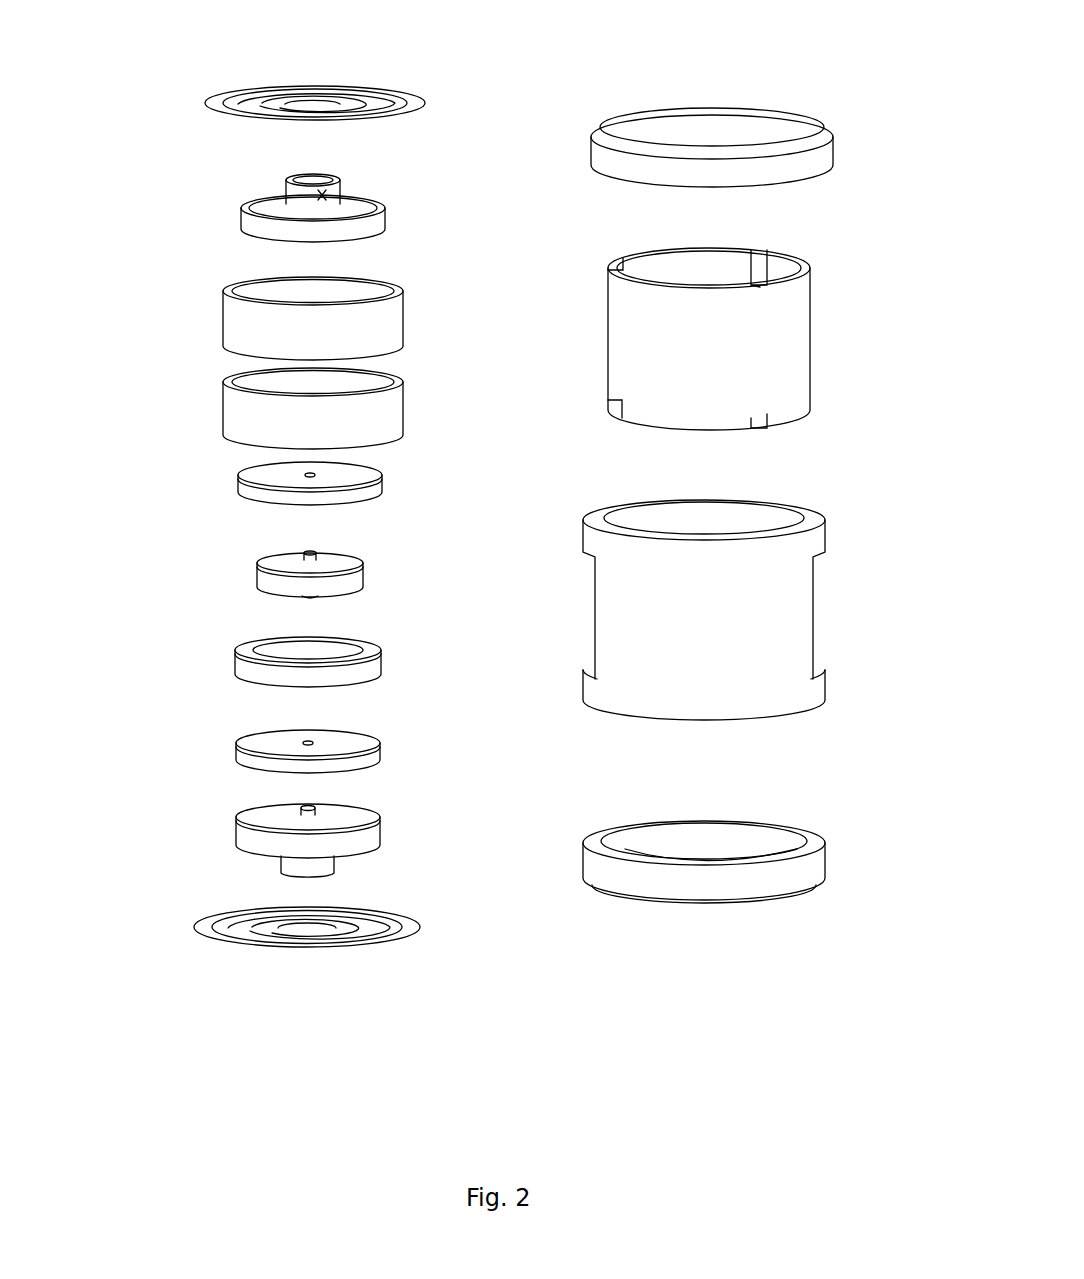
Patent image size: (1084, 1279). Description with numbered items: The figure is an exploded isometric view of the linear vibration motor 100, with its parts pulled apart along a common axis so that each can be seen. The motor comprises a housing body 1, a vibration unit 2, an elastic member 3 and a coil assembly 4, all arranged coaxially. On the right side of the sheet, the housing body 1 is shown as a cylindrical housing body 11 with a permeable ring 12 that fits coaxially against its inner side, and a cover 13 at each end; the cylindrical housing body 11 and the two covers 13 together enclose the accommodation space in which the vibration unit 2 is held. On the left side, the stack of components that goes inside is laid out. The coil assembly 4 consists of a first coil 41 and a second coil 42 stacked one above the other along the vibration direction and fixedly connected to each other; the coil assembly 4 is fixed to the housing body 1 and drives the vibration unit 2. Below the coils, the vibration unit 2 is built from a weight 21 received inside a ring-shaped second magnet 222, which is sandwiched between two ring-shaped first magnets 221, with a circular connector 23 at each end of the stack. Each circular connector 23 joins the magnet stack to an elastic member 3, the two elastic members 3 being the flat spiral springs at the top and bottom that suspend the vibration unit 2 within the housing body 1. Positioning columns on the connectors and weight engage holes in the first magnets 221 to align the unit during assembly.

The linear vibration motor 100 is at (558, 46).
The housing body 1 is at (775, 505).
The cylindrical housing body 11 is at (742, 610).
The permeable ring 12 is at (775, 372).
The cover 13 is at (748, 170).
The vibration unit 2 is at (210, 625).
The weight 21 is at (258, 583).
The first magnet 221 is at (265, 495).
The second magnet 222 is at (249, 660).
The circular connector 23 is at (253, 223).
The elastic member 3 is at (203, 103).
The coil assembly 4 is at (365, 363).
The first coil 41 is at (383, 320).
The second coil 42 is at (382, 437).